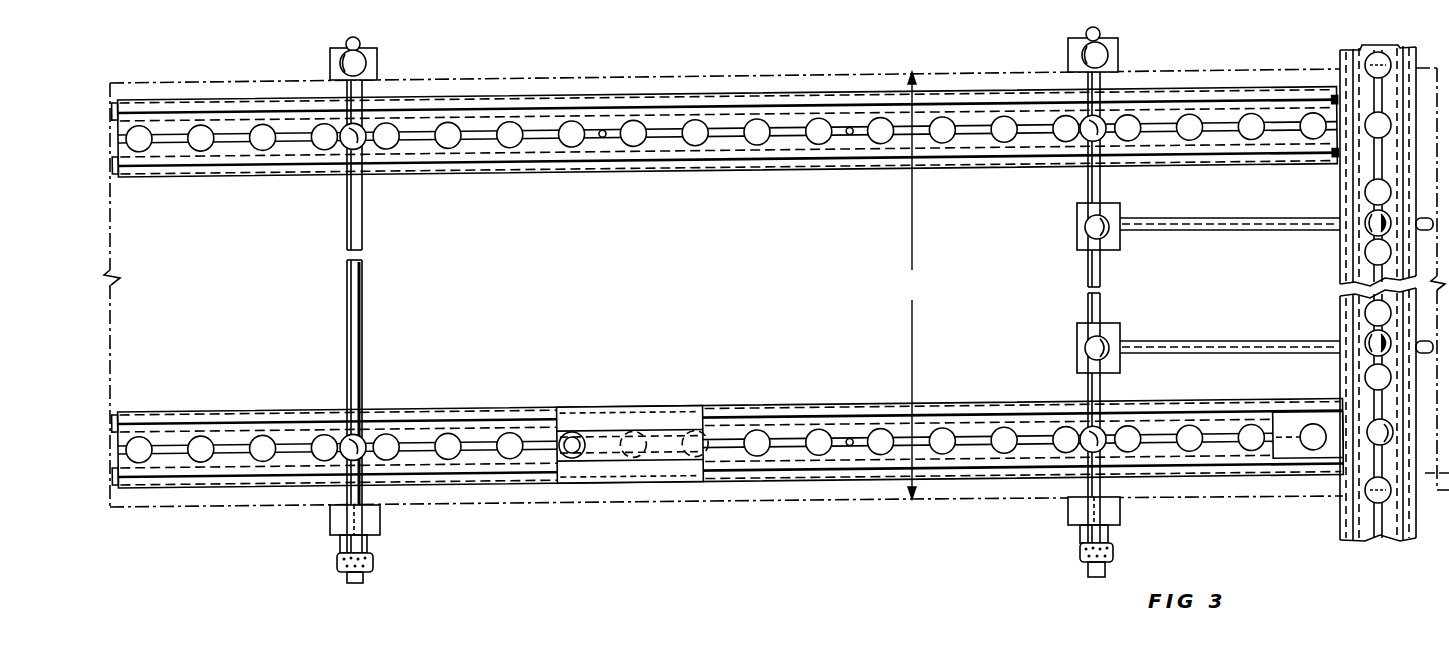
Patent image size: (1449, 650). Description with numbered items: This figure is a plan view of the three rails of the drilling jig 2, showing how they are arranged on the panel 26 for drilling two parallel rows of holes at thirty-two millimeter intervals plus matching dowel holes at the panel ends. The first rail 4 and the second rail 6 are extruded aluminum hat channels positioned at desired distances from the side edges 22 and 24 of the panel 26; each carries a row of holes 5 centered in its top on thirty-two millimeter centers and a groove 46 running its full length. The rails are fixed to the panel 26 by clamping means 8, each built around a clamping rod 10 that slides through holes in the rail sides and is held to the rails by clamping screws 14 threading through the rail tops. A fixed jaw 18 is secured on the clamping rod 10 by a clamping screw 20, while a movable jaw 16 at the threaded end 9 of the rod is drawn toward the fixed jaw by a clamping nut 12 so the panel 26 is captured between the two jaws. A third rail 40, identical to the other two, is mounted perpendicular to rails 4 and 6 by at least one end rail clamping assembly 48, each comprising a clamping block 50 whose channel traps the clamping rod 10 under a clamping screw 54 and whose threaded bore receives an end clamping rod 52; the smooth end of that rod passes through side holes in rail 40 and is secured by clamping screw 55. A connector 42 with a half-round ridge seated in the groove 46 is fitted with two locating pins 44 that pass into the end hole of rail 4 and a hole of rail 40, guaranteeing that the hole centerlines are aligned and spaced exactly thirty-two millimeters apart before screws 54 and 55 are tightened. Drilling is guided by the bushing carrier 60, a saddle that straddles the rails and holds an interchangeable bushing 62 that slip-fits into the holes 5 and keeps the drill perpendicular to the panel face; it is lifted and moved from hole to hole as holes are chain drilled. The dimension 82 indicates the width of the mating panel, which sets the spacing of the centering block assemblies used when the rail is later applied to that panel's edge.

The drilling jig 2 is at (843, 52).
The first rail 4 is at (727, 422).
The holes 5 is at (697, 123).
The second rail 6 is at (724, 104).
The clamping means 8 is at (366, 256).
The threaded end 9 is at (365, 580).
The clamping rod 10 is at (363, 322).
The clamping nut 12 is at (340, 568).
The clamping screws 14 is at (358, 145).
The movable jaw 16 is at (330, 515).
The fixed jaw 18 is at (377, 62).
The clamping screw 20 is at (342, 62).
The side edge 22 is at (810, 504).
The side edge 24 is at (537, 78).
The panel 26 is at (748, 276).
The third rail 40 is at (1365, 42).
The connector 42 is at (1335, 423).
The locating pins 44 is at (1315, 445).
The groove 46 is at (662, 128).
The end rail clamping assembly 48 is at (1273, 335).
The clamping block 50 is at (1077, 232).
The end clamping rod 52 is at (1228, 231).
The clamping screw 54 is at (1105, 225).
The clamping screw 55 is at (1372, 222).
The bushing carrier 60 is at (650, 414).
The bushing 62 is at (568, 440).
The width 82 is at (911, 285).